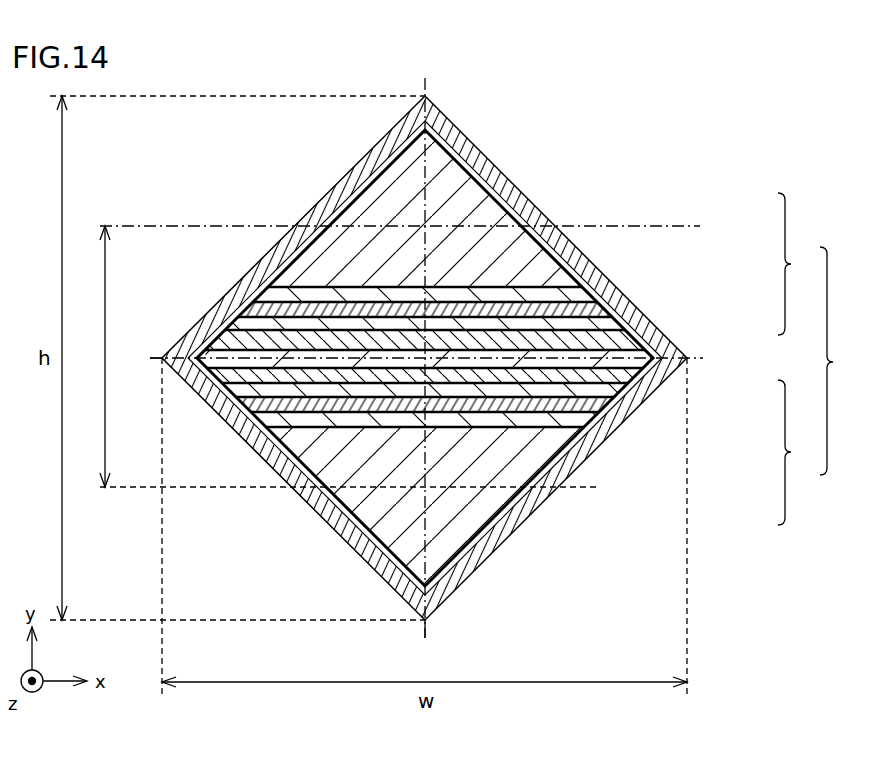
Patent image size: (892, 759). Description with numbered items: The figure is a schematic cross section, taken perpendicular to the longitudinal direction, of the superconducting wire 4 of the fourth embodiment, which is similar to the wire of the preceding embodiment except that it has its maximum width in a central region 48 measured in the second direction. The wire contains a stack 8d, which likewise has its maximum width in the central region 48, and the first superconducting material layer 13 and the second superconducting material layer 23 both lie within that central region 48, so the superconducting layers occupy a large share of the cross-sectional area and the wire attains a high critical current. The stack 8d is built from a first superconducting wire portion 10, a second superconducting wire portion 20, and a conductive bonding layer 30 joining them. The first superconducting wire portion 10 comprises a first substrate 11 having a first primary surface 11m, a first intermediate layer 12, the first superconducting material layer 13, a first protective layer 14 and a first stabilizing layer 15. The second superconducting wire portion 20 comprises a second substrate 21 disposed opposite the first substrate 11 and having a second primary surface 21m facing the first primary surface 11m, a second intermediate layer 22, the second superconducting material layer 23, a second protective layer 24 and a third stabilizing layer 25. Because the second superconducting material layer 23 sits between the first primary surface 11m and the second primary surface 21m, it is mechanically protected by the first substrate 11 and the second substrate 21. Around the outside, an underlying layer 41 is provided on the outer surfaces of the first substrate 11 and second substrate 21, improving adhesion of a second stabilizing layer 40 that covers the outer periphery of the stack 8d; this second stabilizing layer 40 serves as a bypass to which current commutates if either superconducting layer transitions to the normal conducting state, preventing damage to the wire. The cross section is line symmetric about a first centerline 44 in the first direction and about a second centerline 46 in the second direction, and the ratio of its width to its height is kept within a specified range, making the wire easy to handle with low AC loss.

The superconducting wire 4 is at (668, 126).
The stack 8d is at (535, 358).
The first superconducting wire portion 10 is at (514, 477).
The first substrate 11 is at (523, 447).
The first primary surface 11m is at (475, 432).
The first intermediate layer 12 is at (553, 417).
The first superconducting material layer 13 is at (570, 405).
The first protective layer 14 is at (583, 392).
The first stabilizing layer 15 is at (607, 373).
The second superconducting wire portion 20 is at (513, 240).
The second substrate 21 is at (548, 250).
The second primary surface 21m is at (522, 263).
The second intermediate layer 22 is at (532, 295).
The second superconducting material layer 23 is at (548, 310).
The second protective layer 24 is at (583, 325).
The third stabilizing layer 25 is at (603, 340).
The conductive bonding layer 30 is at (627, 355).
The second stabilizing layer 40 is at (500, 177).
The underlying layer 41 is at (475, 288).
The first centerline 44 is at (424, 644).
The second centerline 46 is at (141, 359).
The central region 48 is at (92, 356).